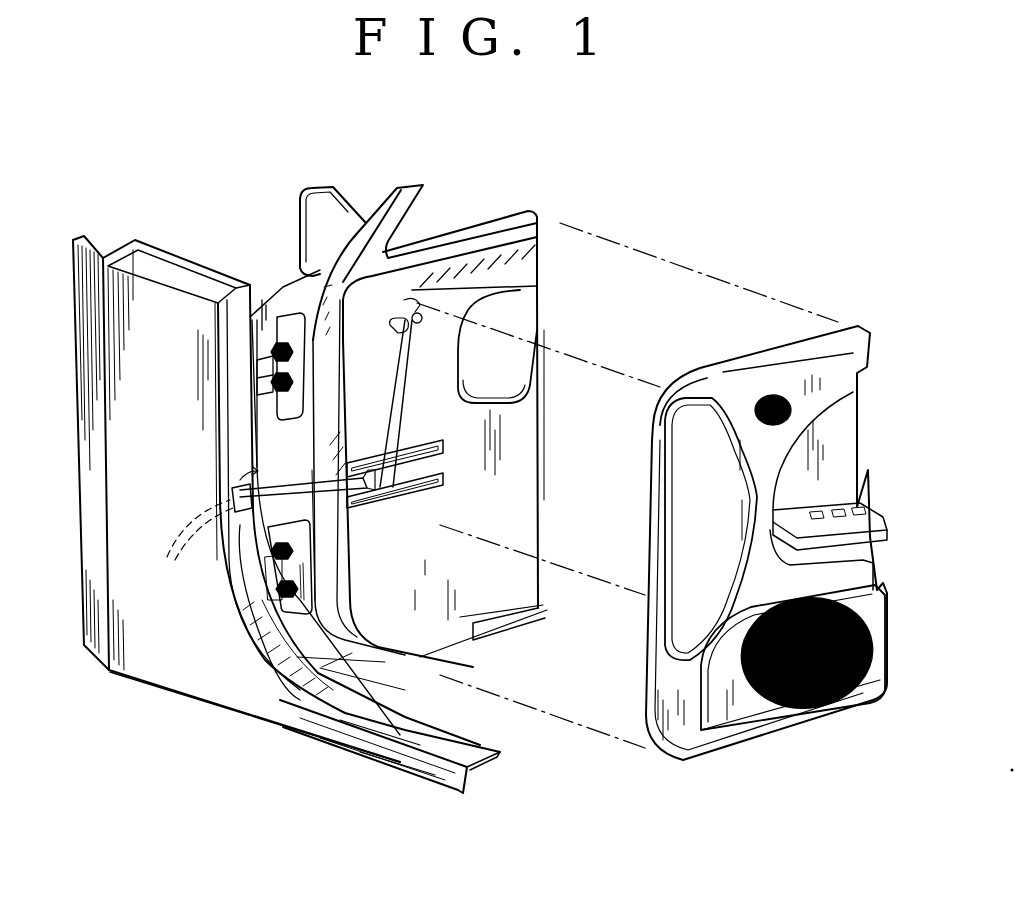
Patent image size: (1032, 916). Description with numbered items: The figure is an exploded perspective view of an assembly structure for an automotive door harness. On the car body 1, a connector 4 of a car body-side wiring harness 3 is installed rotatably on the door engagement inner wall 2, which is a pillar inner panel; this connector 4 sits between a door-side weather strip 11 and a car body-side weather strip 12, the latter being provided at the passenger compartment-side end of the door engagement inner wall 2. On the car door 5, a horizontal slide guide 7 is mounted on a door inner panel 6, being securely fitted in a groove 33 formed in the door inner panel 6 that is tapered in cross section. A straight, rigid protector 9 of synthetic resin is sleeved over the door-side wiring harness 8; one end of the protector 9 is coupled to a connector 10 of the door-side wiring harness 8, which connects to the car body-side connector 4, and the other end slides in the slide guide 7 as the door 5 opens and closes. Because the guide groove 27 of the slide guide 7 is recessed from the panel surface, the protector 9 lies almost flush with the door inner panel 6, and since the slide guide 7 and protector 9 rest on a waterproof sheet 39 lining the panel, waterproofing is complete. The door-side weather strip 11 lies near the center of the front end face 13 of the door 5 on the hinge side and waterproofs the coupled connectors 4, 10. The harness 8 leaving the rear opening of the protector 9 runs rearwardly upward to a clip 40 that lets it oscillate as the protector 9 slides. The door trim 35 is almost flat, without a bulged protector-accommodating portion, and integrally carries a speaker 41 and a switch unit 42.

The car body 1 is at (170, 692).
The door engagement inner wall 2 is at (255, 657).
The car body-side wiring harness 3 is at (233, 506).
The connector 4 is at (240, 530).
The car door 5 is at (483, 206).
The door inner panel 6 is at (507, 487).
The slide guide 7 is at (395, 500).
The door-side wiring harness 8 is at (390, 410).
The protector 9 is at (363, 487).
The connector 10 is at (262, 600).
The door-side weather strip 11 is at (313, 340).
The car body-side weather strip 12 is at (232, 404).
The front end face 13 is at (317, 633).
The guide groove 27 is at (478, 466).
The groove 33 is at (340, 560).
The door trim 35 is at (732, 362).
The waterproof sheet 39 is at (537, 258).
The clip 40 is at (417, 313).
The speaker 41 is at (863, 673).
The switch unit 42 is at (867, 503).